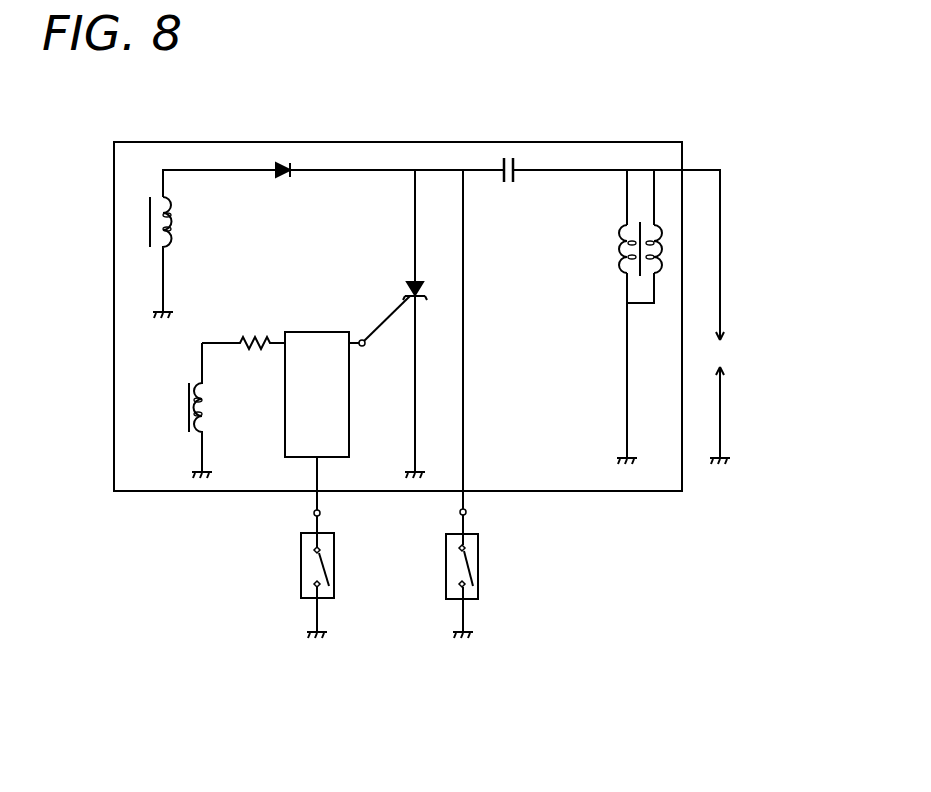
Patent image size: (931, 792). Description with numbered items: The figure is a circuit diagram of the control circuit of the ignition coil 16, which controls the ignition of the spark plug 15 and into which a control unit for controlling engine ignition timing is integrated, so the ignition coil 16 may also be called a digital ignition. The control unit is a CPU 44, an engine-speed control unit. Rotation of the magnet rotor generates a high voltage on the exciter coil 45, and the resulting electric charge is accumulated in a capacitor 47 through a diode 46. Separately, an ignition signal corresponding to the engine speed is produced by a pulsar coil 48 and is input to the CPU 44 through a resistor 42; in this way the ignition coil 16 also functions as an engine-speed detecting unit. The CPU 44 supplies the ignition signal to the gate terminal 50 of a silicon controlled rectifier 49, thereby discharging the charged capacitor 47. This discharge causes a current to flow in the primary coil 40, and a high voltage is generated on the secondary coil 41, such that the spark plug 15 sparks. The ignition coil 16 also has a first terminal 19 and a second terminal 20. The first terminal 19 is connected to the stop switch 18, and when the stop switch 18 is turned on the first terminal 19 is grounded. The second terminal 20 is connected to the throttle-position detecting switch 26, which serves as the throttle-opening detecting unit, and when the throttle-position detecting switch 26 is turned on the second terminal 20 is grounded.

The spark plug 15 is at (722, 356).
The ignition coil 16 is at (605, 142).
The stop switch 18 is at (481, 566).
The first terminal 19 is at (467, 512).
The second terminal 20 is at (321, 513).
The throttle-position detecting switch 26 is at (336, 566).
The primary coil 40 is at (617, 247).
The secondary coil 41 is at (668, 250).
The resistor 42 is at (255, 336).
The CPU 44 is at (351, 400).
The exciter coil 45 is at (172, 222).
The diode 46 is at (281, 162).
The capacitor 47 is at (508, 156).
The pulsar coil 48 is at (187, 406).
The silicon controlled rectifier 49 is at (409, 290).
The gate terminal 50 is at (360, 336).